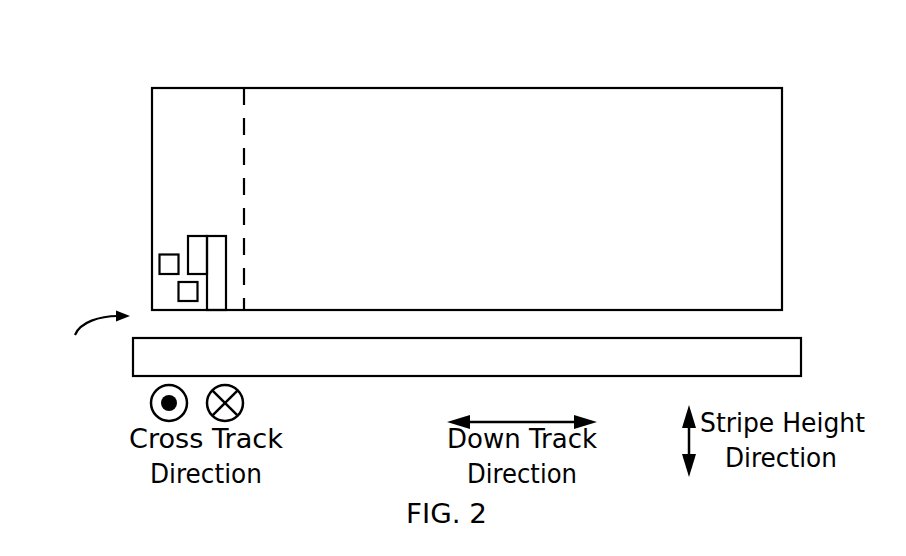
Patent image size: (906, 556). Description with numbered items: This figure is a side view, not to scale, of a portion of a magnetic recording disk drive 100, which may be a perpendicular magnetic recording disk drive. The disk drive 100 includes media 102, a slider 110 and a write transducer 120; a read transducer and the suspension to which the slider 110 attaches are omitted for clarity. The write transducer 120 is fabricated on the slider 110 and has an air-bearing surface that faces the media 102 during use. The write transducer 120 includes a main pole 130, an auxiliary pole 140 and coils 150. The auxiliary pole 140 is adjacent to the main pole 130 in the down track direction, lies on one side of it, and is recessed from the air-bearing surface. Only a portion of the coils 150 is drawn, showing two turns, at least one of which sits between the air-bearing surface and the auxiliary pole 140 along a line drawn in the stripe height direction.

The disk drive 100 is at (470, 26).
The media 102 is at (133, 368).
The slider 110 is at (782, 162).
The write transducer 120 is at (244, 143).
The main pole 130 is at (215, 236).
The auxiliary pole 140 is at (198, 236).
The coils 150 is at (179, 292).